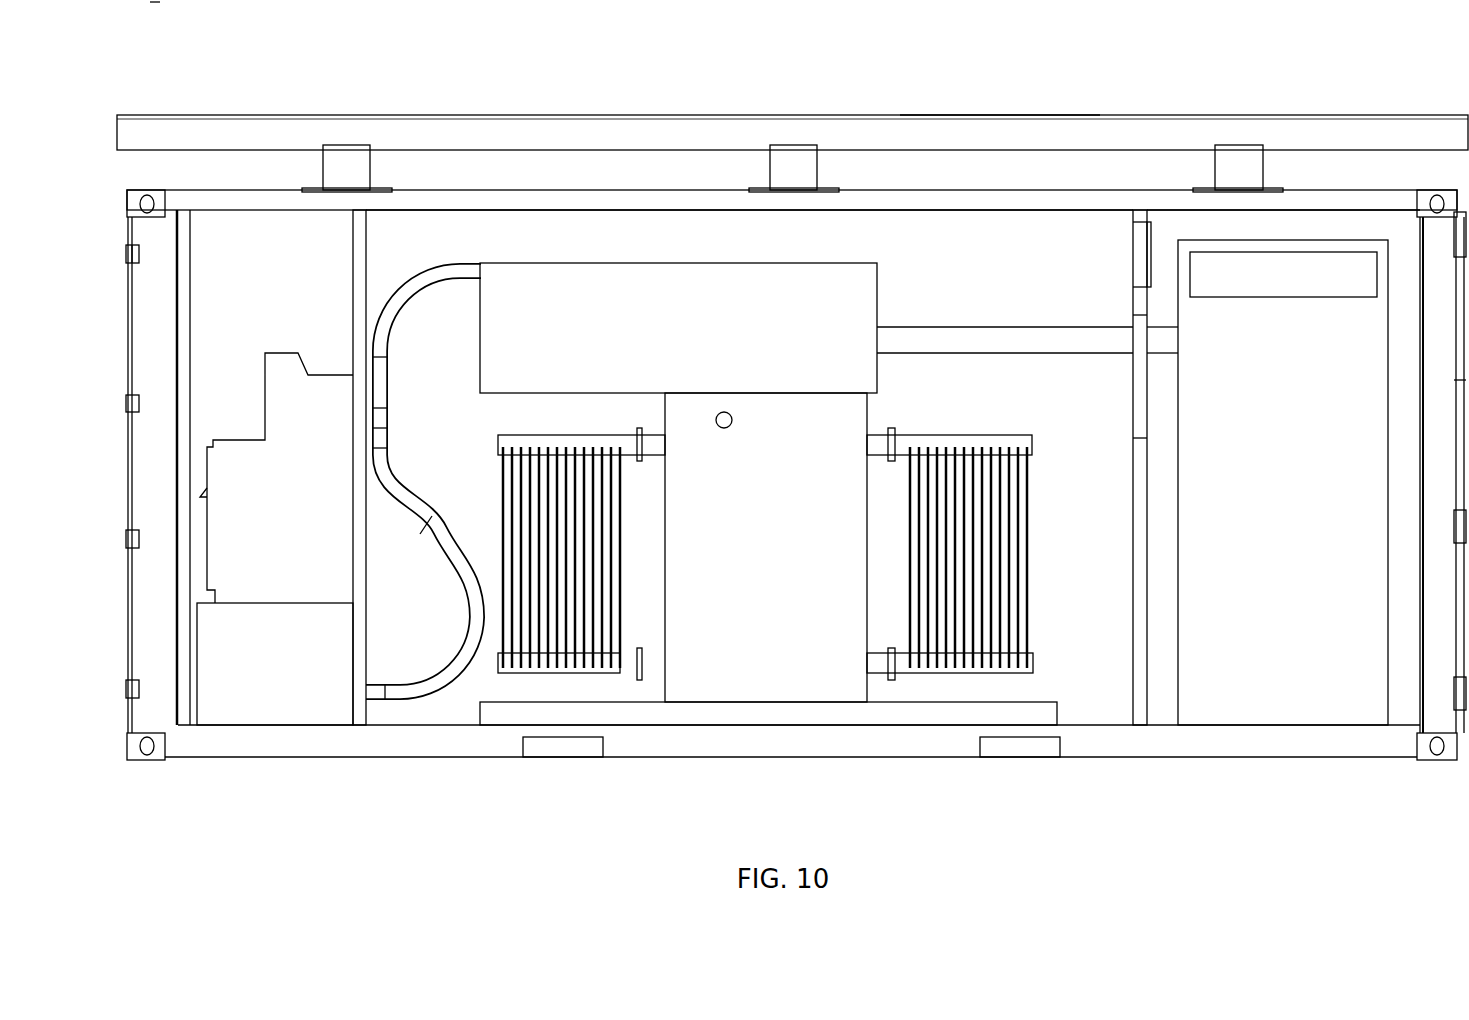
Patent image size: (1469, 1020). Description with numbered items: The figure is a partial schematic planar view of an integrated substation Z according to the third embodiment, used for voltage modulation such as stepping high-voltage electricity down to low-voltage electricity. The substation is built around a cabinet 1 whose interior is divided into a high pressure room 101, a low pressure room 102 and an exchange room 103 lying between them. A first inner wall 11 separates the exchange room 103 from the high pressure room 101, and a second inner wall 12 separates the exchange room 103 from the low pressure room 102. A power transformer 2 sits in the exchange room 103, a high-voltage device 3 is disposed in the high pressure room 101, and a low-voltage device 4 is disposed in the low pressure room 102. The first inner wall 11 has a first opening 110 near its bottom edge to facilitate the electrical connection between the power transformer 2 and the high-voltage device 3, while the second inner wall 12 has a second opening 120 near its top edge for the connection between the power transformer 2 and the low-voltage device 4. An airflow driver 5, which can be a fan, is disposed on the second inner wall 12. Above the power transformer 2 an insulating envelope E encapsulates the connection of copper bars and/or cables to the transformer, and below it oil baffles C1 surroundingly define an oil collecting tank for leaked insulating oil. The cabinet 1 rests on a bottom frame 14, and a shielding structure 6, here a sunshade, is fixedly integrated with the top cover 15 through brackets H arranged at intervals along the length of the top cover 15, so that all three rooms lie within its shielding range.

The integrated substation Z is at (188, 52).
The bracket H is at (322, 163).
The shielding structure 6 is at (789, 108).
The top cover 15 is at (966, 113).
The high pressure room 101 is at (265, 236).
The first inner wall 11 is at (366, 240).
The exchange room 103 is at (708, 236).
The airflow driver 5 is at (1154, 242).
The low pressure room 102 is at (1331, 222).
The cabinet 1 is at (120, 319).
The insulating envelope E is at (661, 293).
The second inner wall 12 is at (1139, 302).
The second opening 120 is at (1138, 395).
The first opening 110 is at (355, 680).
The high-voltage device 3 is at (265, 720).
The oil baffle C1 is at (652, 716).
The power transformer 2 is at (777, 686).
The bottom frame 14 is at (936, 760).
The low-voltage device 4 is at (1289, 693).